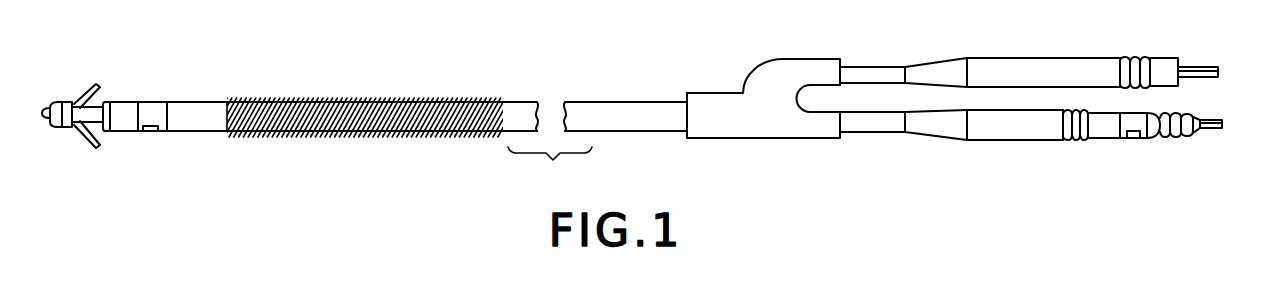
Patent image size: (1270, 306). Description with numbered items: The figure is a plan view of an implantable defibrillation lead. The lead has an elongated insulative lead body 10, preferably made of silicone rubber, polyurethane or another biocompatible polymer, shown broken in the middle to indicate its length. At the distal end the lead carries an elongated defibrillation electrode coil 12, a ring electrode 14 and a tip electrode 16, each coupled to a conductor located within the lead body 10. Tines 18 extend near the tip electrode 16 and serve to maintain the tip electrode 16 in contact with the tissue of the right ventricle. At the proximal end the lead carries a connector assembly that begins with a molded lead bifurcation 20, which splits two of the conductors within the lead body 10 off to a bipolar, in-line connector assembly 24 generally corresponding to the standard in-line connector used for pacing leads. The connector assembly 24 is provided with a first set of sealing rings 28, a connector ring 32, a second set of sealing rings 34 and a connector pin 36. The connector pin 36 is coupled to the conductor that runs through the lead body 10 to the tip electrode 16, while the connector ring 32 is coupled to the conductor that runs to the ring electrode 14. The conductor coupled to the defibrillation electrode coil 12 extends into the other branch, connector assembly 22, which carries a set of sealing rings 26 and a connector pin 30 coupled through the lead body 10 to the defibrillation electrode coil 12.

The lead body 10 is at (513, 108).
The defibrillation electrode coil 12 is at (272, 101).
The ring electrode 14 is at (152, 102).
The tip electrode 16 is at (47, 110).
The tines 18 is at (92, 85).
The lead bifurcation 20 is at (789, 66).
The connector assembly 22 is at (1008, 66).
The bipolar in-line connector assembly 24 is at (993, 134).
The sealing rings 26 is at (1131, 58).
The first set of sealing rings 28 is at (1076, 140).
The connector pin 30 is at (1194, 66).
The connector ring 32 is at (1133, 139).
The second sealing rings 34 is at (1170, 138).
The connector pin 36 is at (1212, 130).